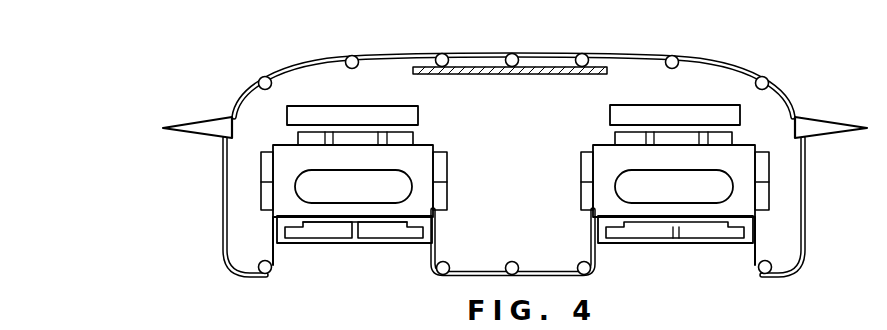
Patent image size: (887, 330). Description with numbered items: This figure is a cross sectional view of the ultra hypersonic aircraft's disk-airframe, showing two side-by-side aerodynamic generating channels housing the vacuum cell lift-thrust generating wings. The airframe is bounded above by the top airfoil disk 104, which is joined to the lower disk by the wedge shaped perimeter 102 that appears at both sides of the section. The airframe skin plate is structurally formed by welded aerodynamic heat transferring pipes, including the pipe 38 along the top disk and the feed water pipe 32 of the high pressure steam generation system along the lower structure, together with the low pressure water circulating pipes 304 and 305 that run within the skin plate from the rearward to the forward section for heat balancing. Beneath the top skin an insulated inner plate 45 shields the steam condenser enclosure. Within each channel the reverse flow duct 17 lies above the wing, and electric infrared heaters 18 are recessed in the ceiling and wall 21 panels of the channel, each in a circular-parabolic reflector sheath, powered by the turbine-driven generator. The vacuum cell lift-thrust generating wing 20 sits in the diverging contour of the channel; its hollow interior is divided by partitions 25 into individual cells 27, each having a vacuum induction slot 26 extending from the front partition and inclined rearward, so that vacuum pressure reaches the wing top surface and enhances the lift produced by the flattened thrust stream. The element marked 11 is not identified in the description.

The top airfoil disk 104 is at (744, 63).
The wedge shaped perimeter 102 is at (182, 118).
The aerodynamic heat transferring pipe 38 is at (352, 55).
The water circulating pipe 305 is at (513, 53).
The insulated inner plate 45 is at (532, 75).
The reverse flow duct 17 is at (347, 117).
The electric infrared heater 18 is at (367, 138).
The processing unit housing 11 is at (379, 186).
The wall panel 21 is at (270, 223).
The vacuum cell lift-thrust generating wing 20 is at (690, 247).
The individual cell 27 is at (333, 239).
The partition 25 is at (377, 239).
The vacuum induction slot 26 is at (402, 224).
The water circulating pipe 304 is at (450, 263).
The feed water pipe 32 is at (507, 263).